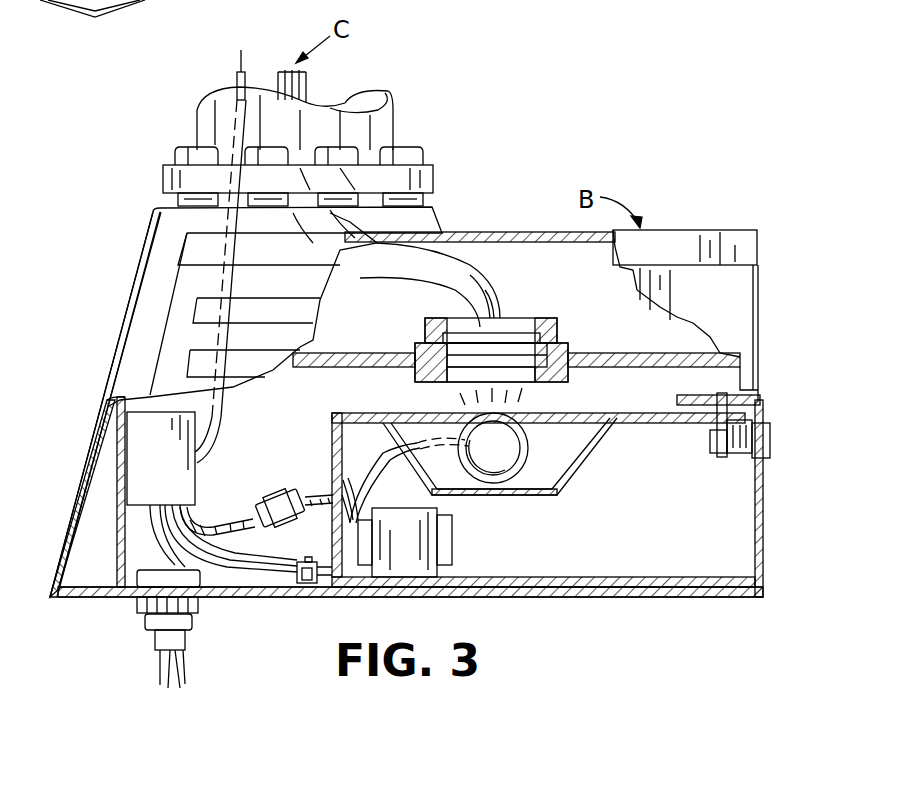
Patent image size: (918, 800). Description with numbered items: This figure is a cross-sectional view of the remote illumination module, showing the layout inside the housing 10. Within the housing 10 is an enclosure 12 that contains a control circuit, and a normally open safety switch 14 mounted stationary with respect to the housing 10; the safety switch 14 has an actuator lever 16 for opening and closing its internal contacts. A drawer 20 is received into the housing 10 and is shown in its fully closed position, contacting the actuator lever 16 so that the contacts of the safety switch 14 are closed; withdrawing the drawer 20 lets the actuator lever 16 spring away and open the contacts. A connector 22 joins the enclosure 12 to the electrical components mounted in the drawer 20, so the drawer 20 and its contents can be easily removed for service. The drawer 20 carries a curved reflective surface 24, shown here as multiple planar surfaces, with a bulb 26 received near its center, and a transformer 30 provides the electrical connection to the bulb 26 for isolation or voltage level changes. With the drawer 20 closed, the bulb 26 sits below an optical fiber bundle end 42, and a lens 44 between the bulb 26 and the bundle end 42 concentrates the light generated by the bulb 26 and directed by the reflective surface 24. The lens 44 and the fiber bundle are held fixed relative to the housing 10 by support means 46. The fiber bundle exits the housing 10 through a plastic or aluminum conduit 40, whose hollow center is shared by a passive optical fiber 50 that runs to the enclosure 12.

The housing 10 is at (755, 295).
The enclosure 12 is at (138, 433).
The safety switch 14 is at (297, 562).
The actuator lever 16 is at (313, 585).
The drawer 20 is at (763, 548).
The connector 22 is at (273, 490).
The curved reflective surface 24 is at (580, 455).
The bulb 26 is at (507, 475).
The transformer 30 is at (443, 530).
The conduit 40 is at (380, 130).
The optical fiber bundle end 42 is at (500, 318).
The lens 44 is at (430, 357).
The support means 46 is at (570, 347).
The passive optical fiber 50 is at (237, 75).